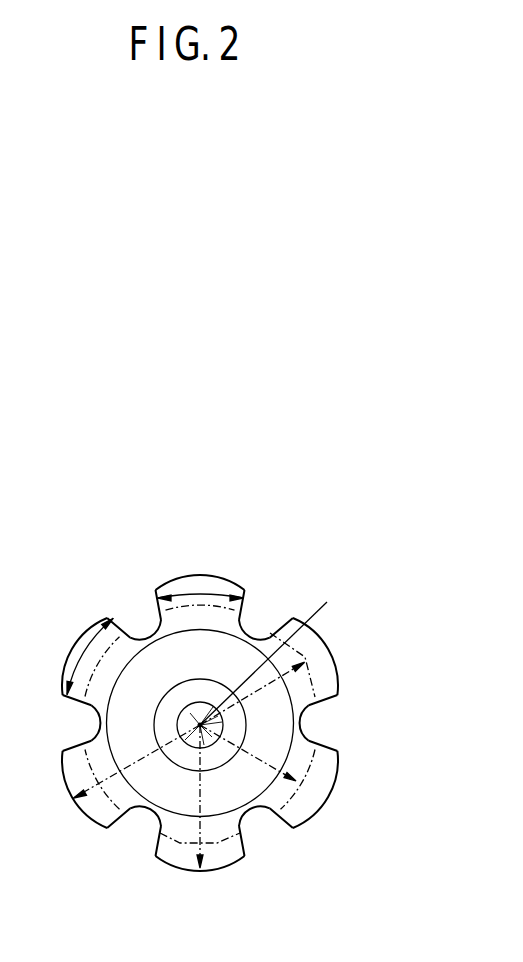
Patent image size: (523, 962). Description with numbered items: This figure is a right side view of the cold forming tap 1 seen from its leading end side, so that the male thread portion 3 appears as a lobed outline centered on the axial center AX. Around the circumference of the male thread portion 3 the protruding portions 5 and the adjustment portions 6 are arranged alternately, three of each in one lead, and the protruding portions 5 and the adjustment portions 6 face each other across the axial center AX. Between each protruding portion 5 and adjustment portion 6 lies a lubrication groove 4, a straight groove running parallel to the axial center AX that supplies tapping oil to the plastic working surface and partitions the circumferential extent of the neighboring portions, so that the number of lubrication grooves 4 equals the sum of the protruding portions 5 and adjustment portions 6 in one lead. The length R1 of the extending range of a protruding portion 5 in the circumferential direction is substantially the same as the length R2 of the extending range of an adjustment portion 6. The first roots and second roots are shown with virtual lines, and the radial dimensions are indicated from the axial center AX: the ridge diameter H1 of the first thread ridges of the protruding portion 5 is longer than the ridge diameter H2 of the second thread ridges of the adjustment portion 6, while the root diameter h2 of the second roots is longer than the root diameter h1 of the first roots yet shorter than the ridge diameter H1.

The cold forming tap 1 is at (403, 488).
The male thread portion 3 is at (229, 728).
The lubrication groove 4 is at (150, 636).
The protruding portion 5 is at (202, 576).
The adjustment portion 6 is at (327, 638).
The axial center AX is at (270, 652).
The ridge diameter of the first thread ridges H1 is at (137, 761).
The ridge diameter of the second thread ridges H2 is at (218, 796).
The root diameter of the first root h1 is at (248, 753).
The root diameter of the second root h2 is at (252, 691).
The length of the extending range of the protruding portion R1 is at (219, 585).
The length of the extending range of the adjustment portion R2 is at (90, 647).